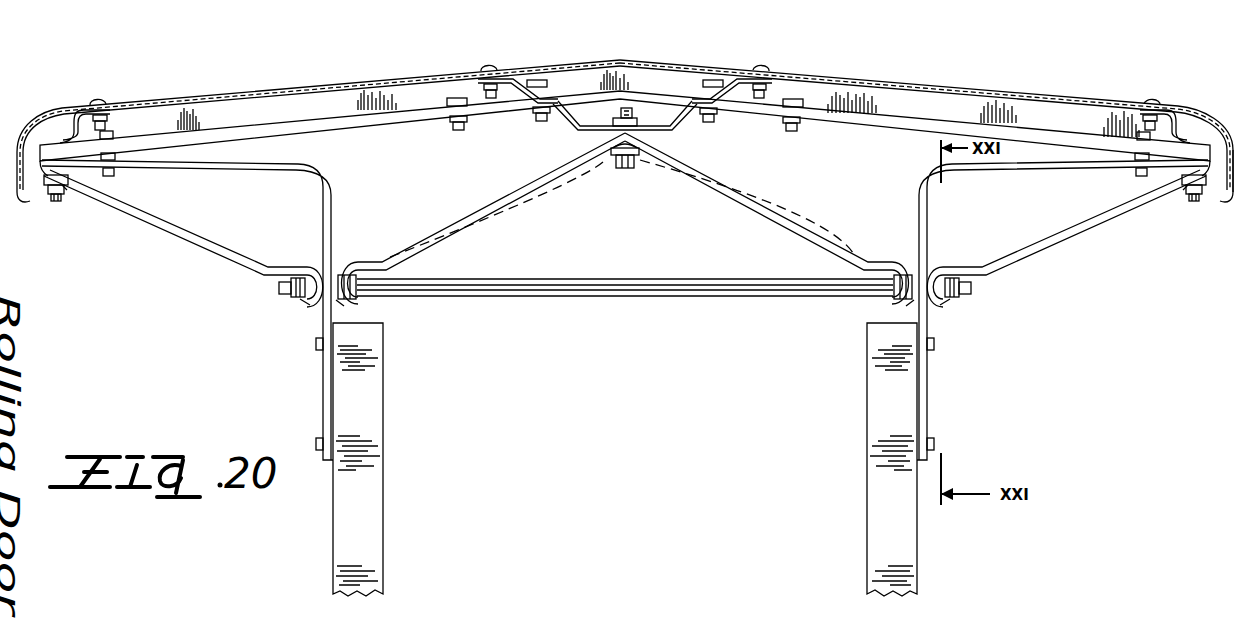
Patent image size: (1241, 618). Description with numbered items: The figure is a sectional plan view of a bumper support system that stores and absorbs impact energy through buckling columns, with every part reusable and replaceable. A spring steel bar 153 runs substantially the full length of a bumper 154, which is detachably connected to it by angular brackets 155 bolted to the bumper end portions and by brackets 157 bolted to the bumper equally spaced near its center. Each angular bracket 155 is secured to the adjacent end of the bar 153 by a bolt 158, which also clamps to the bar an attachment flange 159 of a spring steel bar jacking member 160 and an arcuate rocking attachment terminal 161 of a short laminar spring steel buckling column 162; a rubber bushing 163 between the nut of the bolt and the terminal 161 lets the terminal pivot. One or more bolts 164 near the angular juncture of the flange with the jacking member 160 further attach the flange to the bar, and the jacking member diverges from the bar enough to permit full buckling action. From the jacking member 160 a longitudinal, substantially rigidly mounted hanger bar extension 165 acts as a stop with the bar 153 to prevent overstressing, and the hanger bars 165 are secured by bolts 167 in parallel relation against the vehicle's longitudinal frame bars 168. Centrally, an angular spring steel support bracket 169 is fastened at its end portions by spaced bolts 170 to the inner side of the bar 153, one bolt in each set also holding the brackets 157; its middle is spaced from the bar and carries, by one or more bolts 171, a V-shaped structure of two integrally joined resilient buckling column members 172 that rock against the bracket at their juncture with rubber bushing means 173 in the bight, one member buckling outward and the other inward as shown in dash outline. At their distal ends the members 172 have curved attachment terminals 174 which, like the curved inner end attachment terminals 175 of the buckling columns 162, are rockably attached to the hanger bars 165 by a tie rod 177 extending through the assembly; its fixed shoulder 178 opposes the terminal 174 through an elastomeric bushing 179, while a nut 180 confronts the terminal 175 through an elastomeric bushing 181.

The spring steel bar 153 is at (900, 126).
The bumper 154 is at (893, 57).
The angular brackets 155 is at (72, 126).
The brackets 157 is at (513, 78).
The bolt 158 is at (68, 192).
The attachment flange 159 is at (1230, 140).
The spring steel bar jacking member 160 is at (253, 165).
The arcuate rocking attachment terminal 161 is at (43, 182).
The laminar spring steel buckling column 162 is at (238, 255).
The rubber bushing 163 is at (53, 202).
The bolts 164 is at (117, 168).
The hanger bar extension 165 is at (322, 208).
The bolts 167 is at (316, 345).
The longitudinal frame bars 168 is at (364, 410).
The angular spring steel support bracket 169 is at (573, 120).
The bolts 170 is at (533, 73).
The bolts 171 is at (628, 169).
The buckling column members 172 is at (512, 200).
The rubber bushing means 173 is at (610, 158).
The attachment terminals 174 is at (342, 303).
The inner end attachment terminals 175 is at (316, 306).
The tie rod 177 is at (680, 262).
The fixed shoulder 178 is at (356, 297).
The elastomeric bushing 179 is at (345, 282).
The nut 180 is at (290, 298).
The elastomeric bushing 181 is at (309, 276).